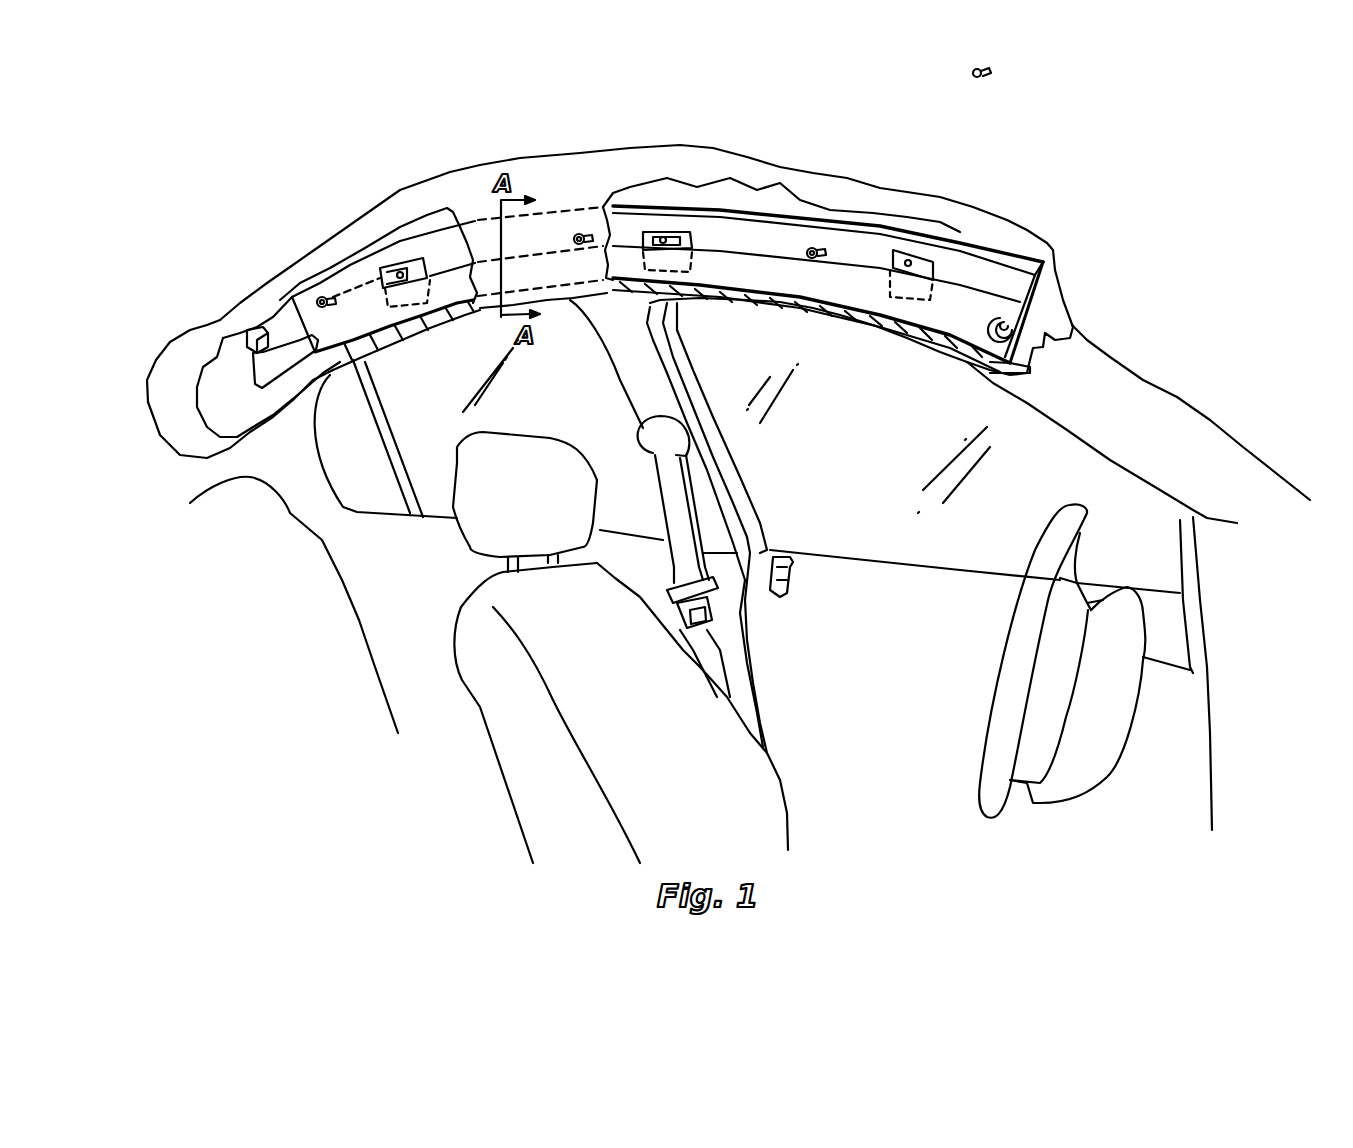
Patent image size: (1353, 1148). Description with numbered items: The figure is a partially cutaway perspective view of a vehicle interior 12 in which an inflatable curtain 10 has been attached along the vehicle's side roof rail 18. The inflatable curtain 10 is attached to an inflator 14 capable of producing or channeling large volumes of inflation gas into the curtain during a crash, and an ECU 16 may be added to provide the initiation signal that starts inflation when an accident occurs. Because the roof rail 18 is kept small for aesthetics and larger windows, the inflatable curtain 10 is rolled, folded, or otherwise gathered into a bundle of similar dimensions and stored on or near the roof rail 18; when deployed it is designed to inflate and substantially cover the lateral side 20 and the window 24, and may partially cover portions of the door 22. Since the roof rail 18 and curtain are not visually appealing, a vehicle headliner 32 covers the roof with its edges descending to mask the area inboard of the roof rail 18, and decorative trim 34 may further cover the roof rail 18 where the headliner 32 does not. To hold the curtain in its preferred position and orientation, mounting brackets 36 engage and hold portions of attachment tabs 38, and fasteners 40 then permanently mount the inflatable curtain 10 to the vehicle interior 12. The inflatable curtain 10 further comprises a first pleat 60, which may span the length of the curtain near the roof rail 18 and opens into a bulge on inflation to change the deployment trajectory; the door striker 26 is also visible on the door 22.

The inflatable curtain 10 is at (630, 225).
The vehicle interior 12 is at (1180, 390).
The inflator 14 is at (287, 357).
The ECU 16 is at (247, 328).
The side roof rail 18 is at (947, 257).
The lateral side 20 is at (730, 596).
The door 22 is at (888, 634).
The window 24 is at (1050, 447).
The door striker 26 is at (790, 553).
The vehicle headliner 32 is at (947, 307).
The decorative trim 34 is at (1057, 368).
The mounting bracket 36 is at (380, 270).
The attachment tab 38 is at (402, 270).
The fastener 40 is at (318, 298).
The first pleat 60 is at (1010, 322).